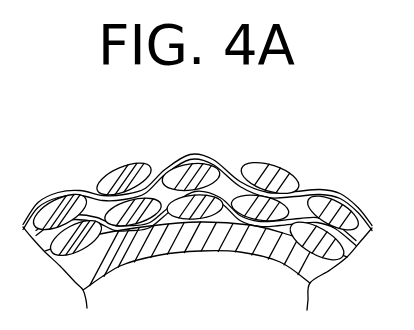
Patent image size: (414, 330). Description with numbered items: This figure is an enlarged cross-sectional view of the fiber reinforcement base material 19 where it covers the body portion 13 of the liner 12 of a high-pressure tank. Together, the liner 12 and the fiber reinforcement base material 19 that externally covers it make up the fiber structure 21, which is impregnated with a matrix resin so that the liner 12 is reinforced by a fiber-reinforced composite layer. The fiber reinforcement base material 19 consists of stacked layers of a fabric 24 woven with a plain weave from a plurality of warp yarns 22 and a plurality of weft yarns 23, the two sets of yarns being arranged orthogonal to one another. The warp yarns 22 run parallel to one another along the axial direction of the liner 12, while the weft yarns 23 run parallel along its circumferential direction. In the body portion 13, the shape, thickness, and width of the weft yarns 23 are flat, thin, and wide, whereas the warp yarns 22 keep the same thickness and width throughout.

The fiber structure 21 is at (341, 124).
The liner 12 is at (320, 279).
The body portion 13 is at (77, 273).
The fiber reinforcement base material 19 is at (352, 200).
The warp yarns 22 is at (196, 158).
The weft yarns 23 is at (110, 175).
The fabric 24 is at (297, 174).